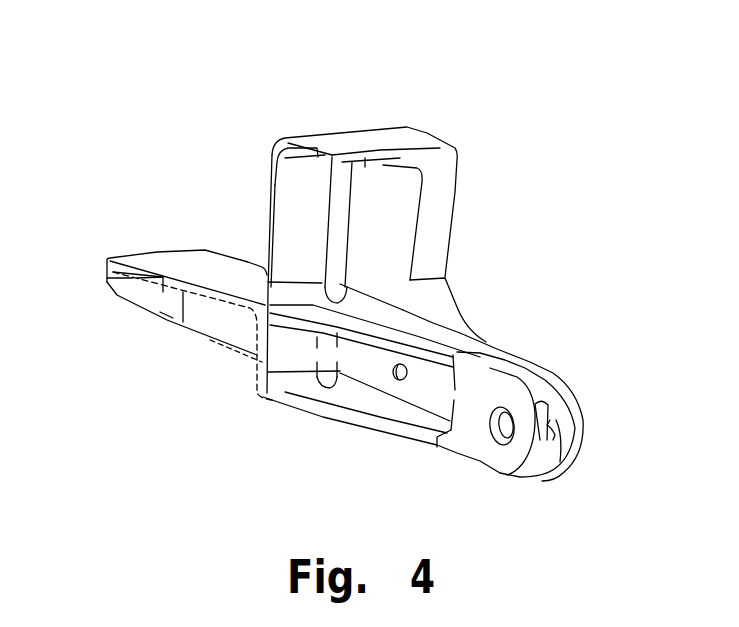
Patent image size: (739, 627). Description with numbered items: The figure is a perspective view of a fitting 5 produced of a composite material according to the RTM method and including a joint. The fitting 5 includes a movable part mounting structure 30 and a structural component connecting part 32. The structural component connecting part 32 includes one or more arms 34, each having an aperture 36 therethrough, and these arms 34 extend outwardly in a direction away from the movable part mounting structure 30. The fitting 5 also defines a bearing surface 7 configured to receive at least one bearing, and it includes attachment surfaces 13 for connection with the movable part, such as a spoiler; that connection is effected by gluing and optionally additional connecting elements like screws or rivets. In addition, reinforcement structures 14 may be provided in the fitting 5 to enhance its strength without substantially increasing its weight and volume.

The fitting 5 is at (240, 335).
The bearing surface 7 is at (550, 420).
The attachment surfaces 13 is at (217, 262).
The reinforcement structures 14 is at (342, 323).
The movable part mounting structure 30 is at (122, 340).
The structural component connecting part 32 is at (536, 337).
The arm 34 is at (482, 447).
The aperture 36 is at (513, 428).